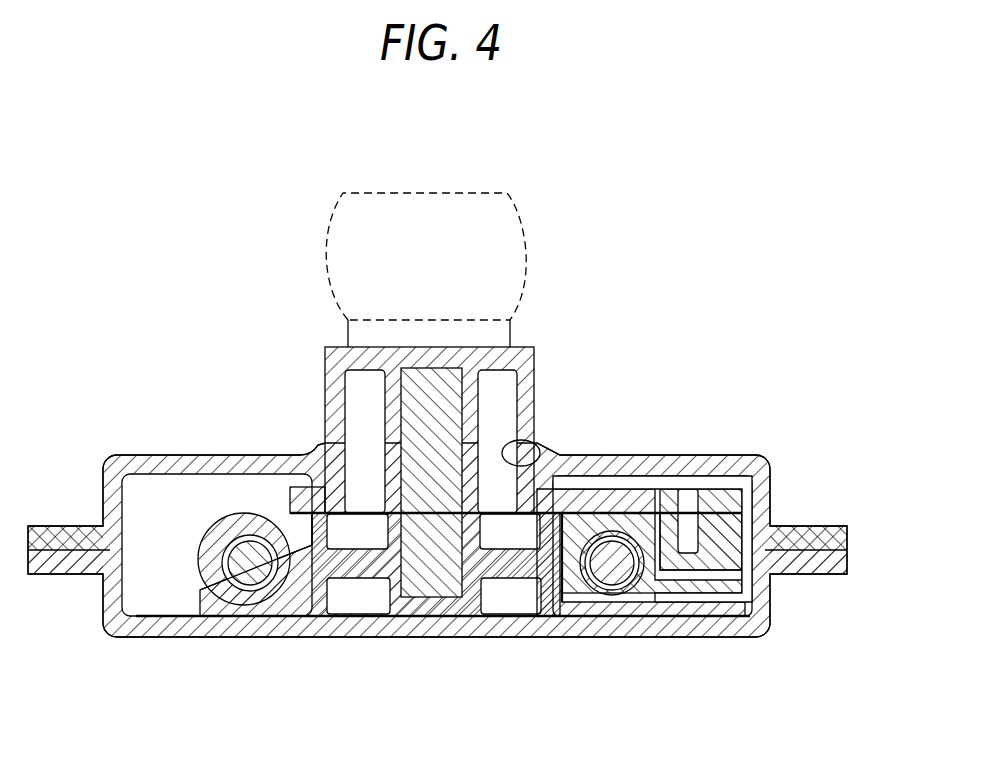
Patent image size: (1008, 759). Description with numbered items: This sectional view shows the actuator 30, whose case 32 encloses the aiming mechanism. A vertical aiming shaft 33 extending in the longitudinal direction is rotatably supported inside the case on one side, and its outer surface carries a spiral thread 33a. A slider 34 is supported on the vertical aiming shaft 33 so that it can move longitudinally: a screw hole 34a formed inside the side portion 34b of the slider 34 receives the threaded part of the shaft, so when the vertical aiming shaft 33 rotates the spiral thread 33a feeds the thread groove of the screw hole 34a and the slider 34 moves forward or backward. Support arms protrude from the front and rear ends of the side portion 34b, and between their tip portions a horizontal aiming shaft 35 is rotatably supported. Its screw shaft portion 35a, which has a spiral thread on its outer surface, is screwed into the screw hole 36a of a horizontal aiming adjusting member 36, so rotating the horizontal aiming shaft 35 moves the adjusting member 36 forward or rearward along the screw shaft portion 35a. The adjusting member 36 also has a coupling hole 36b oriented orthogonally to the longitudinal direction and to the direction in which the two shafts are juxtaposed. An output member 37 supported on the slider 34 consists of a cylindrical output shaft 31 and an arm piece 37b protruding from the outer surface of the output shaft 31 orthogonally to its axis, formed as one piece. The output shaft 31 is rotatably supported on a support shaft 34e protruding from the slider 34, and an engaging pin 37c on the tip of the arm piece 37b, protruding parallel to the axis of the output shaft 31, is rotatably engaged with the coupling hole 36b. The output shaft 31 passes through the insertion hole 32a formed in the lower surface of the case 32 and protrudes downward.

The actuator 30 is at (138, 358).
The output shaft 31 is at (521, 213).
The case 32 is at (745, 455).
The insertion hole 32a is at (540, 442).
The vertical aiming shaft 33 is at (201, 623).
The spiral thread 33a is at (207, 578).
The slider 34 is at (358, 620).
The screw hole 34a is at (268, 600).
The side portion 34b is at (220, 597).
The support shaft 34e is at (440, 582).
The horizontal aiming shaft 35 is at (585, 622).
The screw shaft portion 35a is at (566, 600).
The horizontal aiming adjusting member 36 is at (730, 610).
The screw hole 36a is at (618, 578).
The coupling hole 36b is at (705, 587).
The output member 37 is at (472, 518).
The arm piece 37b is at (645, 478).
The engaging pin 37c is at (683, 557).